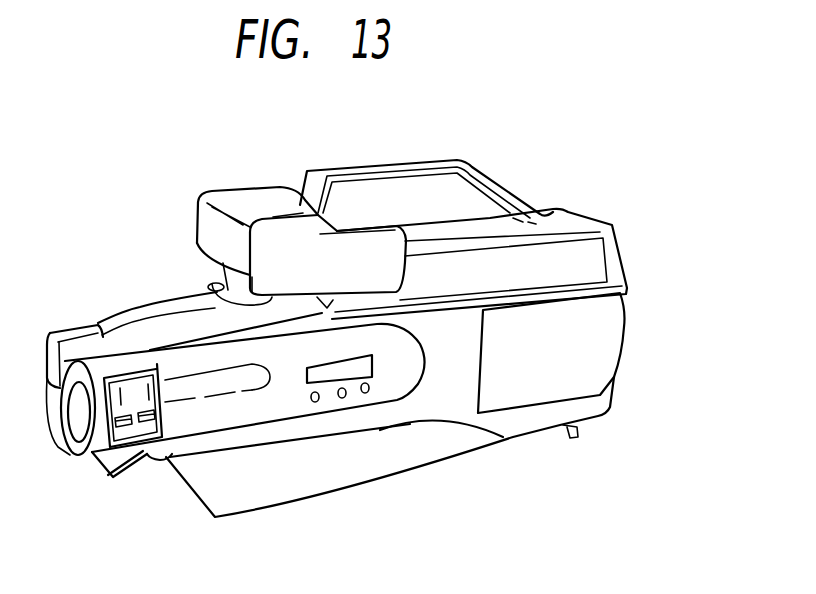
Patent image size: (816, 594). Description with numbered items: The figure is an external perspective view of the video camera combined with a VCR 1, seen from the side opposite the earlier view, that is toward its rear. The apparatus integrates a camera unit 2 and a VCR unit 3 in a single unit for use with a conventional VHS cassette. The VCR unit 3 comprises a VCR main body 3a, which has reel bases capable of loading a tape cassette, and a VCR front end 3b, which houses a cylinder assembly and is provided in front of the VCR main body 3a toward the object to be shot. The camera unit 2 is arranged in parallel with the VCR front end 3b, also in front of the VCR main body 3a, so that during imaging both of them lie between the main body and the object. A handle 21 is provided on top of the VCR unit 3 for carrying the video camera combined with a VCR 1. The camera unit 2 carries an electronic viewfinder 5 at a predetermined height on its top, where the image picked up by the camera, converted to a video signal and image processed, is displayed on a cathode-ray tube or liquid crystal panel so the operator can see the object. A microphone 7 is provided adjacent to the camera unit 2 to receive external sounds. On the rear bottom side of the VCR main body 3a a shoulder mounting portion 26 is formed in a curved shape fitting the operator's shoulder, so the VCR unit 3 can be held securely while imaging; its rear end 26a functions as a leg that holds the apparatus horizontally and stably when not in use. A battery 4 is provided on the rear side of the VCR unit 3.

The video camera combined with a VCR 1 is at (565, 184).
The camera unit 2 is at (88, 452).
The VCR unit 3 is at (617, 259).
The VCR main body 3a is at (440, 398).
The VCR front end 3b is at (152, 297).
The battery 4 is at (603, 347).
The electronic viewfinder 5 is at (247, 200).
The microphone 7 is at (72, 332).
The handle 21 is at (420, 164).
The shoulder mounting portion 26 is at (513, 440).
The rear end 26a is at (575, 440).